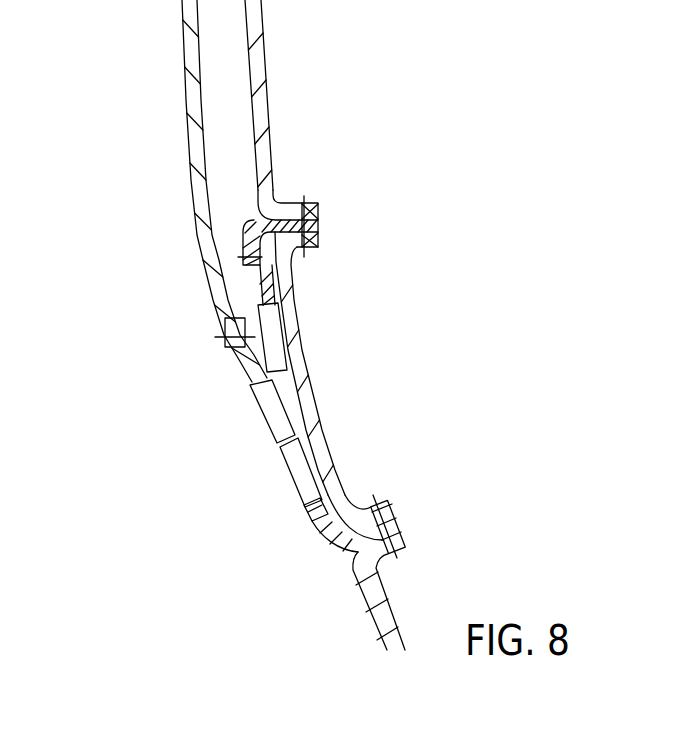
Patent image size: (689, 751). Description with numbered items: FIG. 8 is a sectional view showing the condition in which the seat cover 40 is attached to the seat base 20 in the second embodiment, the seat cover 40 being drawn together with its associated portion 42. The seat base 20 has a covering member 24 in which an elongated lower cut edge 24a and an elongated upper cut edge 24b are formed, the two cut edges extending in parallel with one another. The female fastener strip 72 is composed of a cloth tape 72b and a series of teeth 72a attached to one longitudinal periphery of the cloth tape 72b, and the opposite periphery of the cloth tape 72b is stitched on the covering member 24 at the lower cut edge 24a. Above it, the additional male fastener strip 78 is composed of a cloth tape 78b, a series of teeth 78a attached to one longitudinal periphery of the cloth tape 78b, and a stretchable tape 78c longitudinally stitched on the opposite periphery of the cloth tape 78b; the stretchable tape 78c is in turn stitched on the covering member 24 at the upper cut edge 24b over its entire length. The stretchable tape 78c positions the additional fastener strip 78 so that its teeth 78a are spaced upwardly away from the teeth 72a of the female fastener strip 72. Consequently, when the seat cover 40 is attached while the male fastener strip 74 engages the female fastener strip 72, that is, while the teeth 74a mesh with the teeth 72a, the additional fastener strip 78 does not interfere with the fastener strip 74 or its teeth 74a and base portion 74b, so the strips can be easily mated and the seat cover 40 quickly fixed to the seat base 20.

The seat base 20 is at (328, 147).
The covering member 24 is at (255, 63).
The lower cut edge 24a is at (345, 549).
The upper cut edge 24b is at (250, 218).
The seat cover 40 is at (180, 191).
The panel 42 is at (193, 87).
The female fastener strip 72 is at (253, 527).
The teeth 72a is at (298, 465).
The cloth tape 72b is at (333, 530).
The male fastener strip 74 is at (209, 443).
The teeth 74a is at (272, 412).
The seal block 74b is at (247, 384).
The additional male fastener strip 78 is at (170, 296).
The teeth 78a is at (258, 316).
The cloth tape 78b is at (268, 287).
The stretchable tape 78c is at (248, 244).